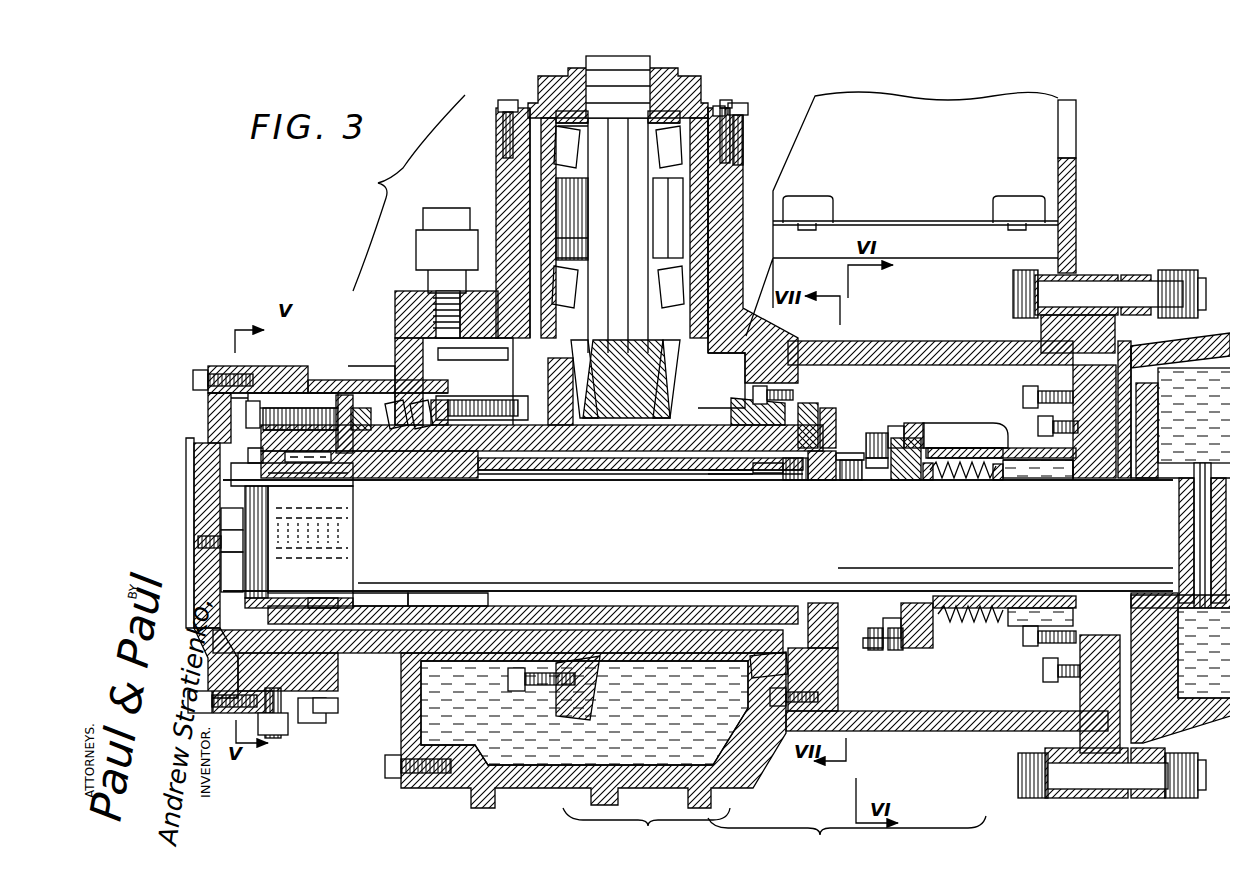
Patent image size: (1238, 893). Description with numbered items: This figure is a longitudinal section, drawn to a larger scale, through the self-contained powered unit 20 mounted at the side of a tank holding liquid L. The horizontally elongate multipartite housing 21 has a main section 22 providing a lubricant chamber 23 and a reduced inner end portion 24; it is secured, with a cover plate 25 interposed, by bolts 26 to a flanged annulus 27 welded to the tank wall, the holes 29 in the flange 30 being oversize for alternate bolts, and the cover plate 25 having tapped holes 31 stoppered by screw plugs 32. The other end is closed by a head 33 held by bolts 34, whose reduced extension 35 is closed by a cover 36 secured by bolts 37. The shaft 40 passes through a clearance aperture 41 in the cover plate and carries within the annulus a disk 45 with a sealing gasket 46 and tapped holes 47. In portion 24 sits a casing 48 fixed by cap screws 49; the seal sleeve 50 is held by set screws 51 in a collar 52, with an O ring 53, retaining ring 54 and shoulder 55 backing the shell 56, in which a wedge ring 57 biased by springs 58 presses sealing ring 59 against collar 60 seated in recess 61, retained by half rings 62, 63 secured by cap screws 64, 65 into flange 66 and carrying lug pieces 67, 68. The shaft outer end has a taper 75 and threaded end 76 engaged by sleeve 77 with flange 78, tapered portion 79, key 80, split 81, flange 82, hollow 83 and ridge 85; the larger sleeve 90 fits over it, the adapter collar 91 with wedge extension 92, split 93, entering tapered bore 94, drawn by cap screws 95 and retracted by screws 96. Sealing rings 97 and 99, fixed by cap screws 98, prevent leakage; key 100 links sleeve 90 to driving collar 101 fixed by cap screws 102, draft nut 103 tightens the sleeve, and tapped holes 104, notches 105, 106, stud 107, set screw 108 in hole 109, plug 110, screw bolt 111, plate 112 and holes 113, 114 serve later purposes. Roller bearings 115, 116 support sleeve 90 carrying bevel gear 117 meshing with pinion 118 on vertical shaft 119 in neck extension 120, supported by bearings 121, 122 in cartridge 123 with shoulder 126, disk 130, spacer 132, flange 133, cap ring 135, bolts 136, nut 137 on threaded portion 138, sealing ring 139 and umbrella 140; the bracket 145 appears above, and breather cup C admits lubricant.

The self-contained powered unit 20 is at (405, 193).
The multipartite housing 21 is at (847, 833).
The main section 22 is at (646, 827).
The chamber 23 is at (533, 760).
The inner end portion 24 is at (947, 735).
The cover plate 25 is at (1088, 268).
The bolts 26 is at (1012, 287).
The flanged annulus 27 is at (1185, 700).
The holes 29 is at (1058, 780).
The flange 30 is at (1055, 268).
The tapped holes 31 is at (1075, 372).
The screw plugs 32 is at (1058, 390).
The head 33 is at (380, 335).
The bolts 34 is at (375, 768).
The extension 35 is at (292, 385).
The cover 36 is at (210, 355).
The bolts 37 is at (183, 372).
The shaft 40 is at (698, 535).
The clearance aperture 41 is at (1090, 472).
The disk 45 is at (1118, 590).
The sealing gasket 46 is at (1208, 358).
The tapped holes 47 is at (1145, 472).
The cylindrical casing 48 is at (985, 442).
The cap screws 49 is at (1038, 418).
The sleeve 50 is at (938, 598).
The set screws 51 is at (885, 595).
The collar 52 is at (880, 625).
The O ring 53 is at (1010, 590).
The split retaining ring 54 is at (845, 472).
The peripheral shoulder 55 is at (985, 472).
The tubular shell 56 is at (955, 445).
The wedge ring 57 is at (948, 472).
The springs 58 is at (965, 472).
The sealing ring 59 is at (920, 472).
The collar 60 is at (895, 472).
The circumferential recess 61 is at (908, 418).
The half ring 62 is at (890, 418).
The half ring 63 is at (890, 645).
The cap screw 64 is at (866, 428).
The cap screw 65 is at (868, 645).
The flange 66 is at (920, 415).
The lug piece 67 is at (868, 446).
The lug piece 68 is at (860, 640).
The taper 75 is at (350, 570).
The threaded end 76 is at (260, 555).
The sleeve 77 is at (598, 458).
The flange 78 is at (268, 392).
The internal circumferential portion 79 is at (360, 588).
The key 80 is at (310, 539).
The quadrant split 81 is at (725, 462).
The flange 82 is at (752, 462).
The hollowed portion 83 is at (542, 465).
The external circumferential ridge 85 is at (352, 465).
The sleeve 90 is at (660, 602).
The adapter collar 91 is at (830, 480).
The wedge extension 92 is at (790, 592).
The quadrant split 93 is at (785, 465).
The tapered bore 94 is at (778, 465).
The cap screws 95 is at (838, 595).
The screws 96 is at (848, 420).
The sealing ring 97 is at (810, 415).
The cap screws 98 is at (822, 360).
The sealing ring 99 is at (355, 398).
The key 100 is at (348, 472).
The driving collar 101 is at (285, 352).
The cap screws 102 is at (238, 408).
The draft nut 103 is at (235, 470).
The tapped holes 104 is at (240, 445).
The peripheral notch 105 is at (239, 713).
The peripheral notch 106 is at (300, 718).
The stud 107 is at (270, 728).
The set screw 108 is at (453, 684).
The hole 109 is at (415, 590).
The plug 110 is at (325, 705).
The screw bolt 111 is at (213, 537).
The removable plate 112 is at (178, 510).
The axial hole 113 is at (213, 518).
The holes 114 is at (213, 585).
The roller bearing 115 is at (420, 400).
The roller bearing 116 is at (742, 405).
The bevel gear 117 is at (566, 455).
The bevel pinion 118 is at (643, 380).
The vertical shaft 119 is at (632, 232).
The neck extension 120 is at (498, 200).
The roller bearing 121 is at (550, 150).
The roller bearing 122 is at (548, 278).
The cartridge 123 is at (535, 205).
The internal annular shoulder 126 is at (497, 340).
The disk 130 is at (665, 185).
The spacing element 132 is at (543, 243).
The flange 133 is at (737, 130).
The cap ring 135 is at (718, 106).
The securing bolts 136 is at (495, 97).
The nut 137 is at (562, 138).
The threaded portion 138 is at (565, 112).
The sealing ring 139 is at (583, 86).
The umbrella 140 is at (697, 80).
The bracket 145 is at (905, 86).
The breather cup C is at (405, 241).
The liquid L is at (1204, 467).